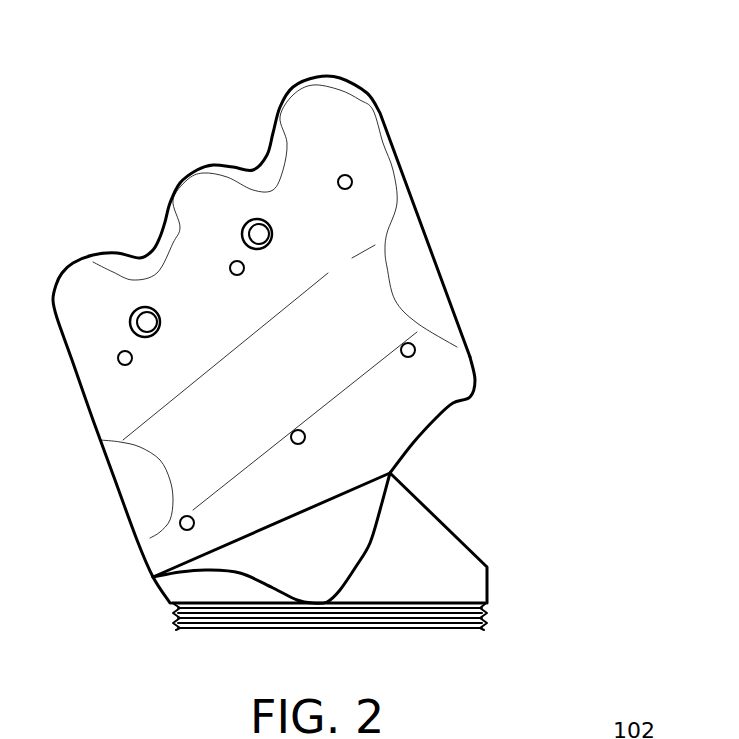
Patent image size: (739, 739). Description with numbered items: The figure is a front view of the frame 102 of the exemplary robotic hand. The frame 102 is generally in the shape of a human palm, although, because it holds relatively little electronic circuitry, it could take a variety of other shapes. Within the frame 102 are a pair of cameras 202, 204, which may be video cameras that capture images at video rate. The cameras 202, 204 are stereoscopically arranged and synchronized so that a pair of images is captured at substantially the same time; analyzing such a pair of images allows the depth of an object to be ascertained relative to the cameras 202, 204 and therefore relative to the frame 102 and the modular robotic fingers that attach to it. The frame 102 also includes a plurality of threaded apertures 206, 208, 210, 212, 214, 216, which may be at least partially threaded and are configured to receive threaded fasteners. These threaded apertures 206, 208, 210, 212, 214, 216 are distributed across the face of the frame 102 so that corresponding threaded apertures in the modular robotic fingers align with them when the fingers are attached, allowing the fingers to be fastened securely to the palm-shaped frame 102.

The frame 102 is at (458, 121).
The camera 202 is at (158, 318).
The camera 204 is at (264, 233).
The threaded aperture 206 is at (125, 365).
The threaded aperture 208 is at (244, 270).
The threaded aperture 210 is at (352, 181).
The threaded aperture 212 is at (183, 530).
The threaded aperture 214 is at (306, 434).
The threaded aperture 216 is at (412, 357).